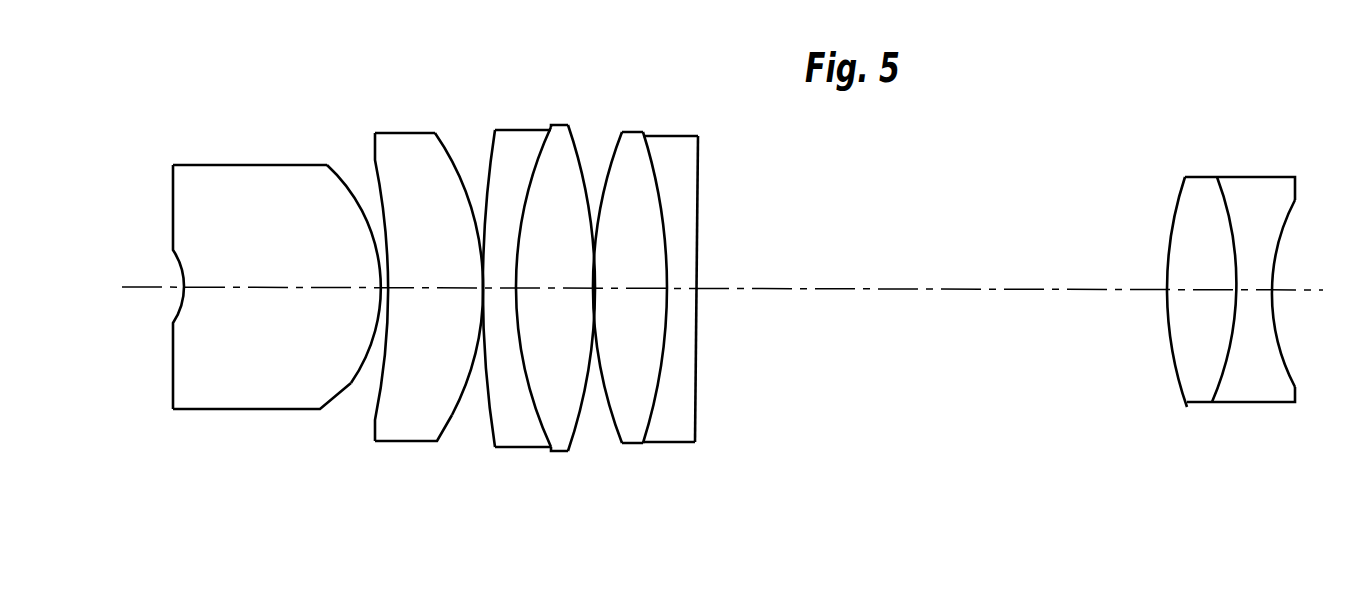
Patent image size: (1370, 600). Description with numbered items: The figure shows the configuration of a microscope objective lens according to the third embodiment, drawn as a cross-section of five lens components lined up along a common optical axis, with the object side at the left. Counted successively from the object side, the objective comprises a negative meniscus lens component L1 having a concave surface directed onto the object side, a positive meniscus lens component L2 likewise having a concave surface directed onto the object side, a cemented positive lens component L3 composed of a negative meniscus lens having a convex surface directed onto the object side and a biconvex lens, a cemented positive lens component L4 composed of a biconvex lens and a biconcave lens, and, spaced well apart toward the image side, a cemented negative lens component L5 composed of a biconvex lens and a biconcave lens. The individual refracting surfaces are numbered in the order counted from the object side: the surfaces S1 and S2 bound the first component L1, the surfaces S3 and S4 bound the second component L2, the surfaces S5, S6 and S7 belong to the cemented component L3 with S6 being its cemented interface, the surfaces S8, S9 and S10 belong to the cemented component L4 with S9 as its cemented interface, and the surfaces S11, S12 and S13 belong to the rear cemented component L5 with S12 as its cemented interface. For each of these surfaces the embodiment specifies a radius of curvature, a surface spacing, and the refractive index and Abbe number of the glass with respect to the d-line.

The negative meniscus lens component L1 is at (249, 337).
The positive meniscus lens component L2 is at (406, 344).
The cemented positive lens component L3 is at (529, 343).
The cemented positive lens component L4 is at (686, 346).
The cemented negative lens component L5 is at (1234, 340).
The lens surface S1 is at (173, 382).
The lens surface S2 is at (353, 370).
The lens surface S3 is at (378, 386).
The lens surface S4 is at (453, 420).
The lens surface S5 is at (492, 407).
The lens surface S6 is at (538, 417).
The lens surface S7 is at (577, 419).
The lens surface S8 is at (613, 417).
The lens surface S9 is at (653, 408).
The lens surface S10 is at (697, 395).
The lens surface S11 is at (1175, 372).
The lens surface S12 is at (1226, 368).
The lens surface S13 is at (1292, 366).